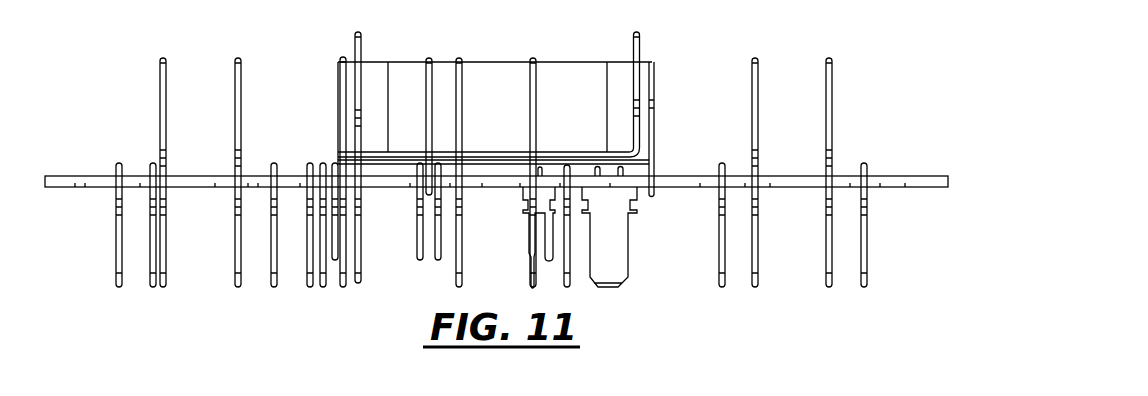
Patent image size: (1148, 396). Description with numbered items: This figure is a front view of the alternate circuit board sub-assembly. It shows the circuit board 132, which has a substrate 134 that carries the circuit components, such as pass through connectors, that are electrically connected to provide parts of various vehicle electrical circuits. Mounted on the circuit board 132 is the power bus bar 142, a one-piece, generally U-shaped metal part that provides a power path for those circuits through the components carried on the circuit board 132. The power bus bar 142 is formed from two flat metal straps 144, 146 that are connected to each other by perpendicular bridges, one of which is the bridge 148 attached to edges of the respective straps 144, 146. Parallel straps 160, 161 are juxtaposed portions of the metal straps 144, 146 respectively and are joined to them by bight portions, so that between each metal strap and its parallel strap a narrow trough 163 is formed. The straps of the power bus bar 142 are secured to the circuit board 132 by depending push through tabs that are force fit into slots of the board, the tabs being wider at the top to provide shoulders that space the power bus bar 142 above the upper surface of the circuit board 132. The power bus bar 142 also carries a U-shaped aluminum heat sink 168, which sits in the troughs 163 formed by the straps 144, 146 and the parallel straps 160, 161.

The circuit board 132 is at (496, 255).
The substrate 134 is at (897, 188).
The power bus bar 142 is at (663, 81).
The flat metal strap 144 is at (656, 120).
The flat metal strap 146 is at (339, 88).
The bridge 148 is at (500, 158).
The parallel strap 160 is at (632, 52).
The parallel strap 161 is at (363, 73).
The trough 163 is at (640, 165).
The heat sink 168 is at (495, 72).